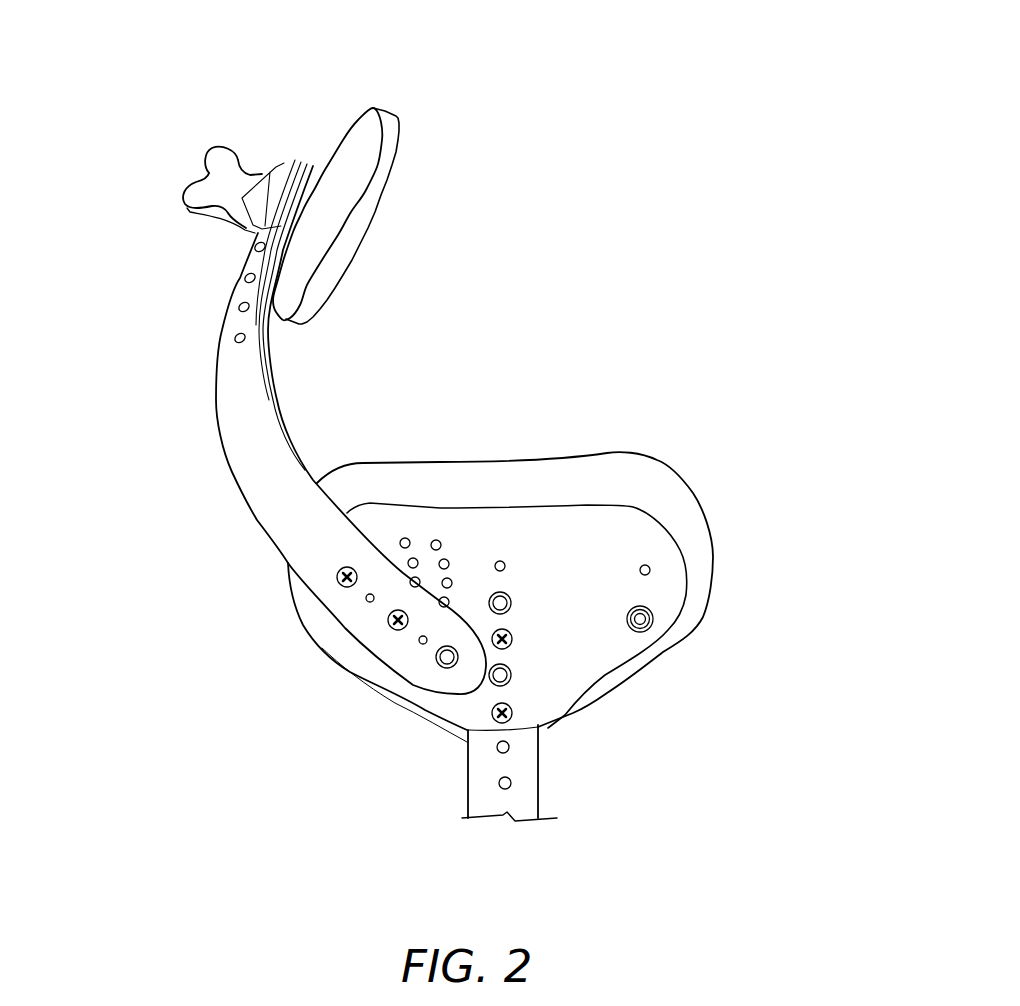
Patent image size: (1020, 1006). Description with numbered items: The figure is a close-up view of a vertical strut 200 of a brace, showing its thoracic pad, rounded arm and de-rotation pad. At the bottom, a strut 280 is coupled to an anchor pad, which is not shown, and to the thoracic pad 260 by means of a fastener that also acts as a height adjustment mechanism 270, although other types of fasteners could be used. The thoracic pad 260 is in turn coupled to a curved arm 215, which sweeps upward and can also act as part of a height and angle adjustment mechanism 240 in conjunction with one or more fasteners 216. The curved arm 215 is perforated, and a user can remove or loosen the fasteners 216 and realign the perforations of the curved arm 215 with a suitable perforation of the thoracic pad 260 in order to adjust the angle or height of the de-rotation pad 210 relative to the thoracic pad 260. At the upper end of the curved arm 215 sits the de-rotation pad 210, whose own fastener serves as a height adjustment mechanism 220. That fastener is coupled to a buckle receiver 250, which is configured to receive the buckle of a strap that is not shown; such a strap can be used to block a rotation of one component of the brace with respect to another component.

The vertical strut 200 is at (701, 73).
The de-rotation pad 210 is at (390, 177).
The curved arm 215 is at (215, 410).
The fasteners 216 is at (397, 631).
The height adjustment mechanism 220 is at (237, 252).
The height and angle adjustment mechanism 240 is at (423, 690).
The buckle receiver 250 is at (185, 195).
The thoracic pad 260 is at (682, 468).
The height adjustment mechanism 270 is at (513, 712).
The strut 280 is at (512, 783).